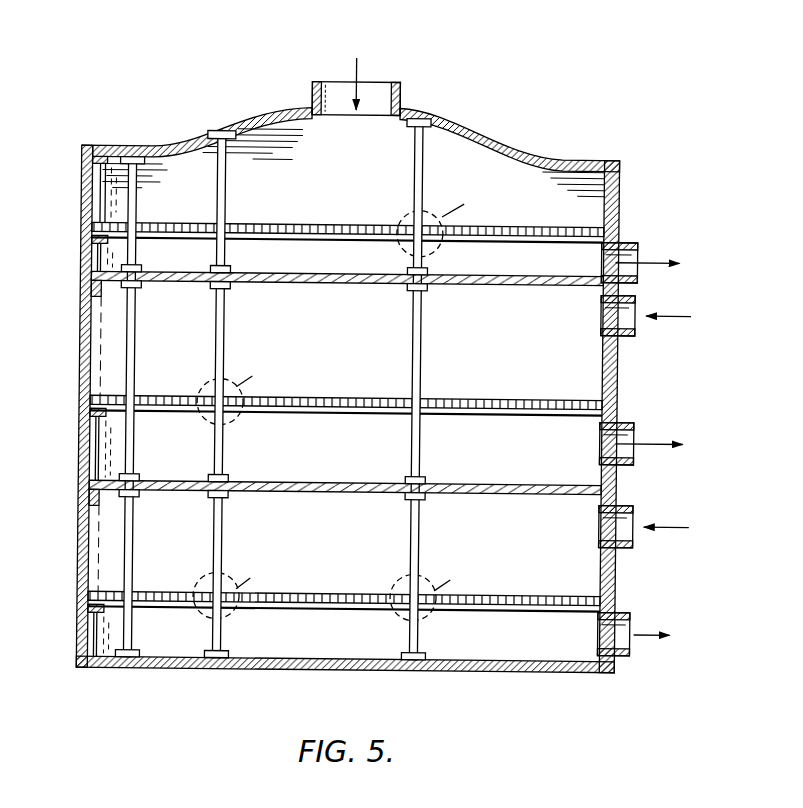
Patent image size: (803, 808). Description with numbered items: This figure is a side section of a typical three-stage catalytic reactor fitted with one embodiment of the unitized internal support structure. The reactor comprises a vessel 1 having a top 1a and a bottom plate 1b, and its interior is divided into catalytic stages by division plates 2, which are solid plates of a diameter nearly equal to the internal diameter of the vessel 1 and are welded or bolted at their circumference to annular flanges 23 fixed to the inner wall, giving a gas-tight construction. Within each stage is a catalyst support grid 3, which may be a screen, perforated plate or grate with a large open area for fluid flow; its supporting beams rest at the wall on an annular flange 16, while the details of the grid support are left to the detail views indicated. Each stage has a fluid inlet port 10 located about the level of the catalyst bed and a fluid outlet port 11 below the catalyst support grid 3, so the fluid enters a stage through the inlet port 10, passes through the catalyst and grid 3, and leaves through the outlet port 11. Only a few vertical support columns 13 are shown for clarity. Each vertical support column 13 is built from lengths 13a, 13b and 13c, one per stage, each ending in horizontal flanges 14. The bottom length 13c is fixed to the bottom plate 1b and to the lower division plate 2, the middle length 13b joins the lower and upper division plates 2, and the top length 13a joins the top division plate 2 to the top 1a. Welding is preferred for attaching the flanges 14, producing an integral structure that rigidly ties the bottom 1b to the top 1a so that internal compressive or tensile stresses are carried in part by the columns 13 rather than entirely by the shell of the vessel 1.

The vessel 1 is at (79, 378).
The top 1a is at (252, 118).
The bottom plate 1b is at (522, 660).
The division plate 2 is at (328, 284).
The catalyst support grid 3 is at (300, 226).
The fluid inlet port 10 is at (372, 97).
The fluid outlet port 11 is at (636, 249).
The vertical support column 13 is at (135, 185).
The vertical support column length 13a is at (228, 187).
The vertical support column length 13b is at (252, 382).
The vertical support column length 13c is at (243, 574).
The horizontal flange 14 is at (238, 130).
The annular flange 16 is at (90, 240).
The annular flange 23 is at (88, 298).